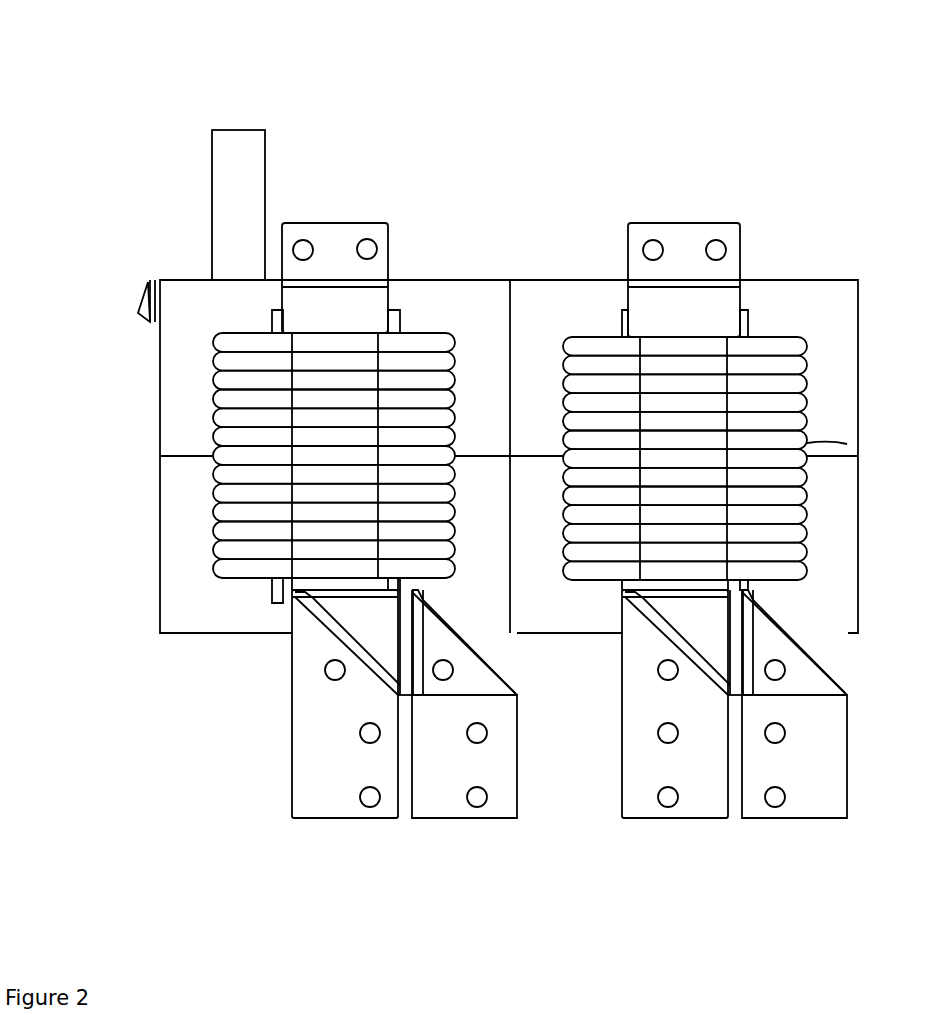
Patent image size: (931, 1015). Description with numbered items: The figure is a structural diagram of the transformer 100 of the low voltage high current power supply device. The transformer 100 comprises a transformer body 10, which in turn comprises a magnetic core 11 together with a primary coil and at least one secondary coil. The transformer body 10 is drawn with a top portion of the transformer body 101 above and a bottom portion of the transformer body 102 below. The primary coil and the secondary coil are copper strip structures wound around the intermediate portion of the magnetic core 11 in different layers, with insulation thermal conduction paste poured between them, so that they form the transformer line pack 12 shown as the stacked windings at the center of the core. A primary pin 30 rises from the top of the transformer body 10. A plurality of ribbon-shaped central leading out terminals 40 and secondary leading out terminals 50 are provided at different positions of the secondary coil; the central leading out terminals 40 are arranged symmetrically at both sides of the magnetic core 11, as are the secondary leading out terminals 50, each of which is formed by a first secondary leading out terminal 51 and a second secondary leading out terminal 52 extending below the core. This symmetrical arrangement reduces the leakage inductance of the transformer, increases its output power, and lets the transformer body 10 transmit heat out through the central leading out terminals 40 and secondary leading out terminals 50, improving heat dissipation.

The transformer 100 is at (208, 93).
The primary pin 30 is at (258, 188).
The central leading out terminal 40 is at (343, 280).
The transformer body 10 is at (62, 448).
The magnetic core 11 is at (178, 445).
The top portion of the transformer body 101 is at (188, 335).
The bottom portion of the transformer body 102 is at (213, 608).
The transformer line pack 12 is at (213, 483).
The secondary leading out terminal 50 is at (440, 884).
The first secondary leading out terminal 51 is at (347, 787).
The second secondary leading out terminal 52 is at (442, 772).